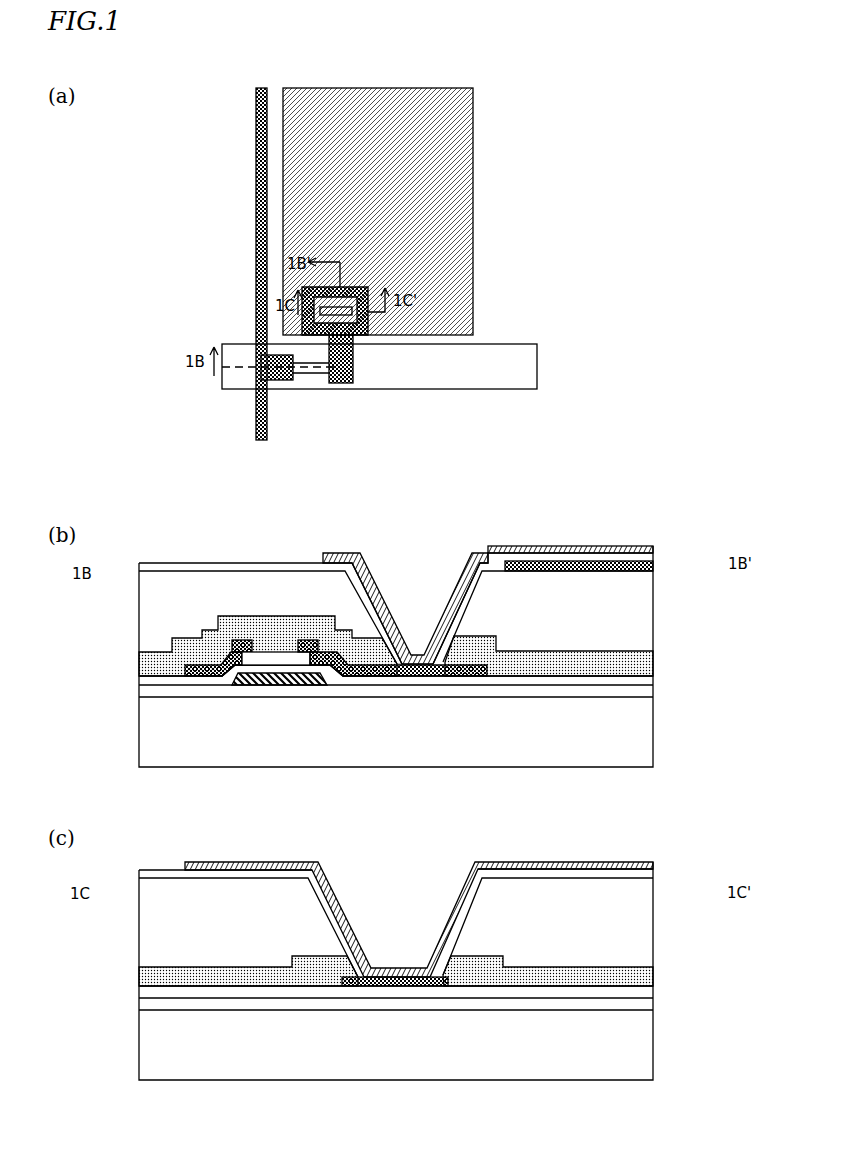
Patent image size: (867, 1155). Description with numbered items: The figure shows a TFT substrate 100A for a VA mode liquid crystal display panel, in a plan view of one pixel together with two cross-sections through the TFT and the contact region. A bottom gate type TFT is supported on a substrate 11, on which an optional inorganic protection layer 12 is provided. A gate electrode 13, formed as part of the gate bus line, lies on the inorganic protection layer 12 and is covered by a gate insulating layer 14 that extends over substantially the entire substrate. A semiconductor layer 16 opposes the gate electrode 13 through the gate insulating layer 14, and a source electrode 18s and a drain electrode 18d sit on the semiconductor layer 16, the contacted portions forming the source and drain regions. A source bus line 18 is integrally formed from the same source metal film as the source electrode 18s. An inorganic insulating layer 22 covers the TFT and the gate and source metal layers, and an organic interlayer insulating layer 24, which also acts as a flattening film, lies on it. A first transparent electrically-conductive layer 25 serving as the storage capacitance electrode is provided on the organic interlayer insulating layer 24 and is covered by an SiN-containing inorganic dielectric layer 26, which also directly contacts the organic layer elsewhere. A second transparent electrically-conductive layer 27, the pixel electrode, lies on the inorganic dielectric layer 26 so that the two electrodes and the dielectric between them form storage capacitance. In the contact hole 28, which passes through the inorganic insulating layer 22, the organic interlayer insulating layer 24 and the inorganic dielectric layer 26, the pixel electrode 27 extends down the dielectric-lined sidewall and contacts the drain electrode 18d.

The TFT substrate 100A is at (578, 113).
The substrate 11 is at (516, 244).
The inorganic protection layer 12 is at (648, 693).
The gate electrode 13 is at (522, 364).
The gate insulating layer 14 is at (648, 680).
The semiconductor layer 16 is at (312, 374).
The source bus line 18 is at (256, 145).
The source electrode 18s is at (278, 381).
The drain electrode 18d is at (353, 384).
The inorganic insulating layer 22 is at (650, 660).
The organic interlayer insulating layer 24 is at (637, 616).
The first transparent electrically-conductive layer 25 is at (625, 572).
The inorganic dielectric layer 26 is at (645, 560).
The second transparent electrically-conductive layer 27 is at (455, 98).
The contact hole 28 is at (368, 290).